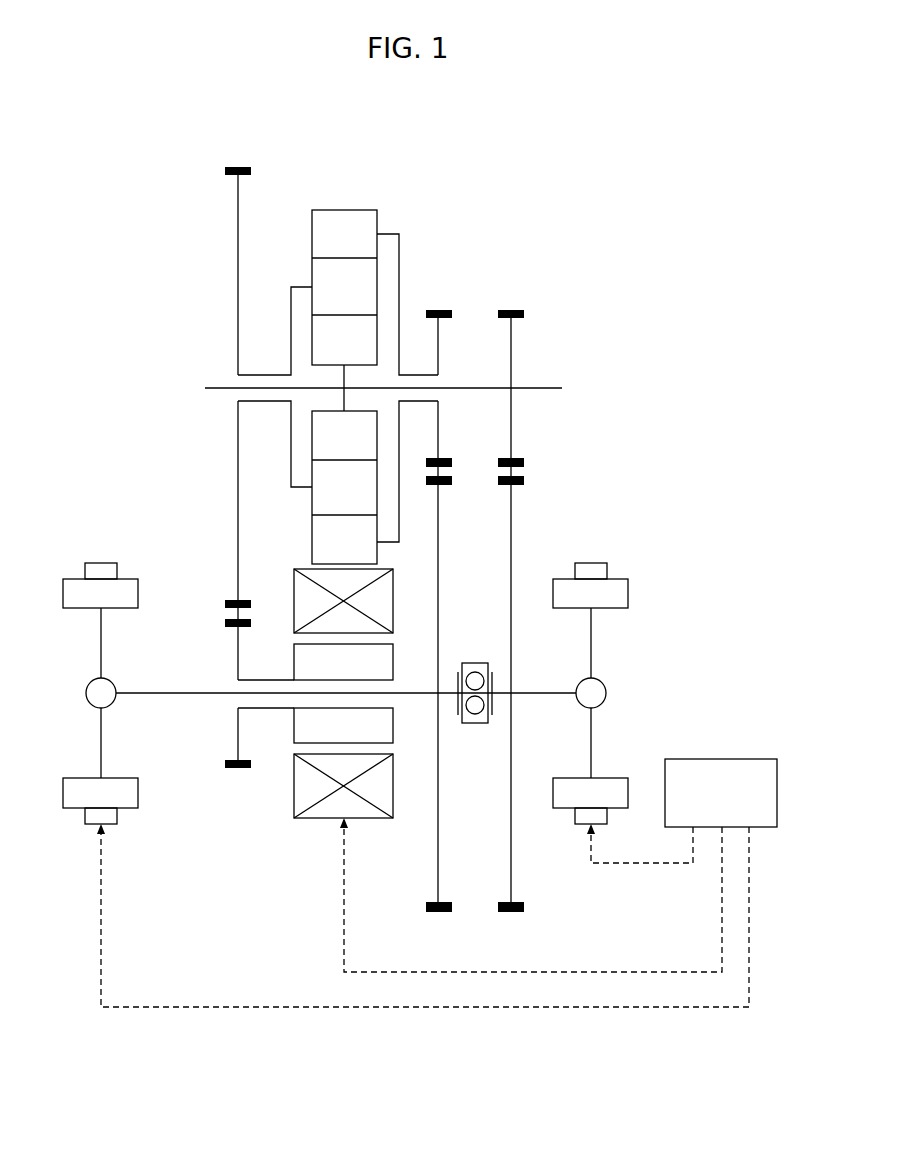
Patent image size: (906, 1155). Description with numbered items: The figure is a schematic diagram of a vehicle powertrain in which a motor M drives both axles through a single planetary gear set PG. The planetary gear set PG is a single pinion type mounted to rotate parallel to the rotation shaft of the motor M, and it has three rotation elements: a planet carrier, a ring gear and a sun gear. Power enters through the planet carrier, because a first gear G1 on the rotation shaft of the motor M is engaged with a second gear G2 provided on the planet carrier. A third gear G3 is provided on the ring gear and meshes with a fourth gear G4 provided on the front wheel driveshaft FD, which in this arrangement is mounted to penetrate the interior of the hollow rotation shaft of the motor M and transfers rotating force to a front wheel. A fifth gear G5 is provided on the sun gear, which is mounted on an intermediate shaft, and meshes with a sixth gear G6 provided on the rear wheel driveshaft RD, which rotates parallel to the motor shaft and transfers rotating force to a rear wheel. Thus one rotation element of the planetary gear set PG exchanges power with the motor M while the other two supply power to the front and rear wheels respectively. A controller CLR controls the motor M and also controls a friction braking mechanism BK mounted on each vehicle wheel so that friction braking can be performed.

The planetary gear set PG is at (353, 200).
The first gear G1 is at (233, 770).
The second gear G2 is at (240, 165).
The third gear G3 is at (445, 308).
The fourth gear G4 is at (446, 486).
The fifth gear G5 is at (516, 308).
The sixth gear G6 is at (525, 480).
The motor M is at (305, 819).
The front wheel driveshaft FD is at (183, 690).
The rear wheel driveshaft RD is at (532, 690).
The friction braking mechanism BK is at (101, 562).
The controller CLR is at (437, 883).